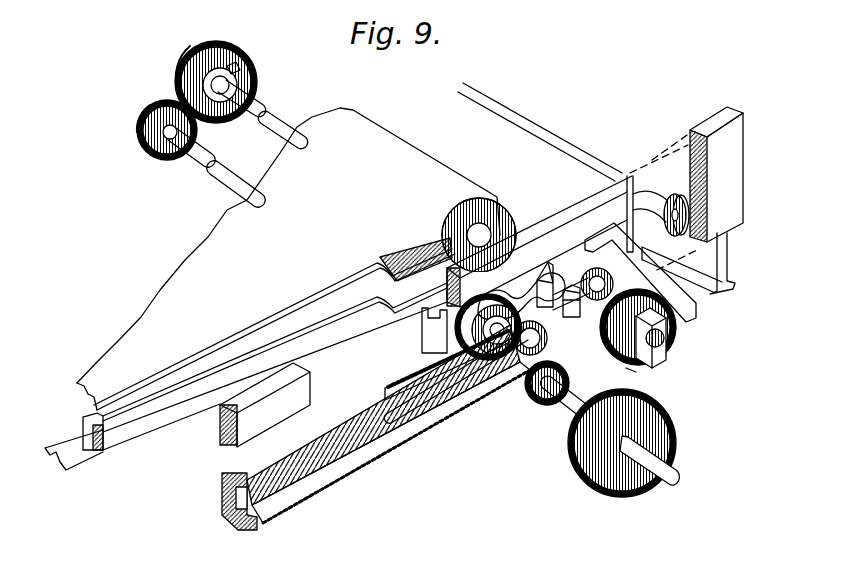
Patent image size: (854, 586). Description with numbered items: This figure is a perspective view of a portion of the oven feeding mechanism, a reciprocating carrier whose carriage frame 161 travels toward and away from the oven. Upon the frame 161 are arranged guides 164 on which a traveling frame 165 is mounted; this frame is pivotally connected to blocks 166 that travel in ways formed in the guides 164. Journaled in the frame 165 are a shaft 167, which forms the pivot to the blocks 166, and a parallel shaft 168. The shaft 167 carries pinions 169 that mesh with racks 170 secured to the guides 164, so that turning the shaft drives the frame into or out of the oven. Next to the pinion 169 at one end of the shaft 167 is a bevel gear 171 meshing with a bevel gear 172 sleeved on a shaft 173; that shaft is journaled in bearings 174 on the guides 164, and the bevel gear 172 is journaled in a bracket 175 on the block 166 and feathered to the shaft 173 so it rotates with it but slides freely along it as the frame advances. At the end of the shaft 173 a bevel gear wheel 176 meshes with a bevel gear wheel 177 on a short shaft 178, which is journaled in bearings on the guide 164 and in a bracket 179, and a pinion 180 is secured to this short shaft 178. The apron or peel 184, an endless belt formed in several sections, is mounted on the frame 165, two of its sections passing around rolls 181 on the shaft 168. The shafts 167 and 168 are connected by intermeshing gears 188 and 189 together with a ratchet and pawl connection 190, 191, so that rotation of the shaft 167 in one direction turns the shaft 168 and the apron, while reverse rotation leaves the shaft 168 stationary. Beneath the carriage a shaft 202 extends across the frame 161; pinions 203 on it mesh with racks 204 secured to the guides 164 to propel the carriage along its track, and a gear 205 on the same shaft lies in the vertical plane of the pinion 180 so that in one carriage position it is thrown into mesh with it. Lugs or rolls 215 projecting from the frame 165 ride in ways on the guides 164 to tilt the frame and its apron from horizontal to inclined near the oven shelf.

The carriage frame 161 is at (727, 263).
The guides 164 is at (565, 212).
The traveling frame 165 is at (350, 335).
The blocks 166 is at (428, 332).
The shaft 167 is at (228, 172).
The shaft 168 is at (280, 123).
The pinions 169 is at (485, 298).
The racks 170 is at (362, 433).
The bevel gear 171 is at (482, 352).
The bevel gear 172 is at (545, 345).
The shaft 173 is at (462, 397).
The bearings 174 is at (585, 320).
The bracket 175 is at (533, 270).
The bevel gear wheel 176 is at (607, 290).
The bevel gear wheel 177 is at (661, 220).
The short shaft 178 is at (668, 340).
The bracket 179 is at (690, 322).
The pinion 180 is at (634, 372).
The rolls 181 is at (494, 200).
The apron or peel 184 is at (288, 259).
The gear 188 is at (155, 110).
The gear 189 is at (203, 82).
The ratchet 190 is at (240, 82).
The pawl 191 is at (236, 60).
The shaft 202 is at (566, 405).
The pinions 203 is at (538, 408).
The racks 204 is at (256, 525).
The gear 205 is at (598, 492).
The lugs or rolls 215 is at (676, 193).